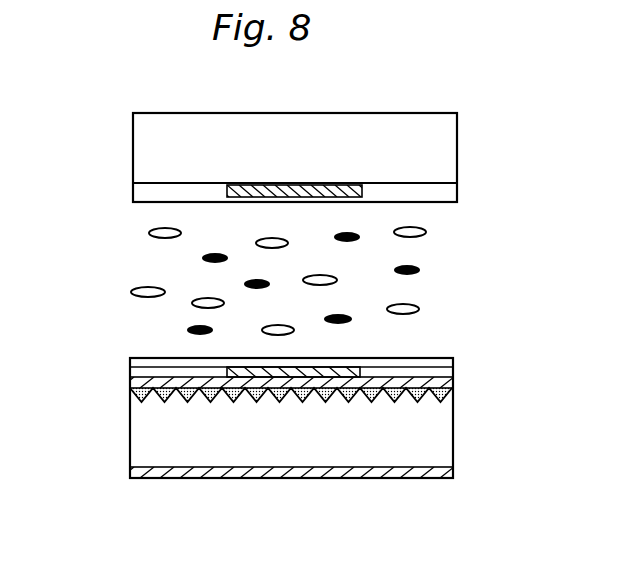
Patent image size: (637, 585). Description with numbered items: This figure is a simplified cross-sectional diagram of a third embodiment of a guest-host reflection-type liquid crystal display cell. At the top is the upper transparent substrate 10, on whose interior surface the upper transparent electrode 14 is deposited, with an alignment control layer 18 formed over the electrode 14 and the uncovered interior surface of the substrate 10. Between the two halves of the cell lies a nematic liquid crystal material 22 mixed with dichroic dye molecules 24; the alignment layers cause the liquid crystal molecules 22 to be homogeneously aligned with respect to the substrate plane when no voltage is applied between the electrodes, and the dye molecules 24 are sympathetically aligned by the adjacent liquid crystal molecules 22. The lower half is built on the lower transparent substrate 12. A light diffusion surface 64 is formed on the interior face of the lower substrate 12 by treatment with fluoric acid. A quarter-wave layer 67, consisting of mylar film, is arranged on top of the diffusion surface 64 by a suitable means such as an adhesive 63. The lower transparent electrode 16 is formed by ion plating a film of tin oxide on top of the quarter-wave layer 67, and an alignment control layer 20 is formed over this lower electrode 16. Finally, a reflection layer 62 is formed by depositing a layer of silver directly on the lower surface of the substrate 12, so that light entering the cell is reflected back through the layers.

The upper transparent substrate 10 is at (133, 135).
The alignment control layer 18 is at (135, 192).
The upper transparent electrode 14 is at (291, 188).
The nematic liquid crystal material 22 is at (149, 235).
The dichroic dye molecules 24 is at (203, 262).
The lower transparent substrate 12 is at (438, 445).
The alignment control layer 20 is at (455, 362).
The lower transparent electrode 16 is at (242, 372).
The quarter-wave layer 67 is at (137, 380).
The adhesive 63 is at (456, 391).
The light diffusion surface 64 is at (187, 389).
The reflection layer 62 is at (152, 467).